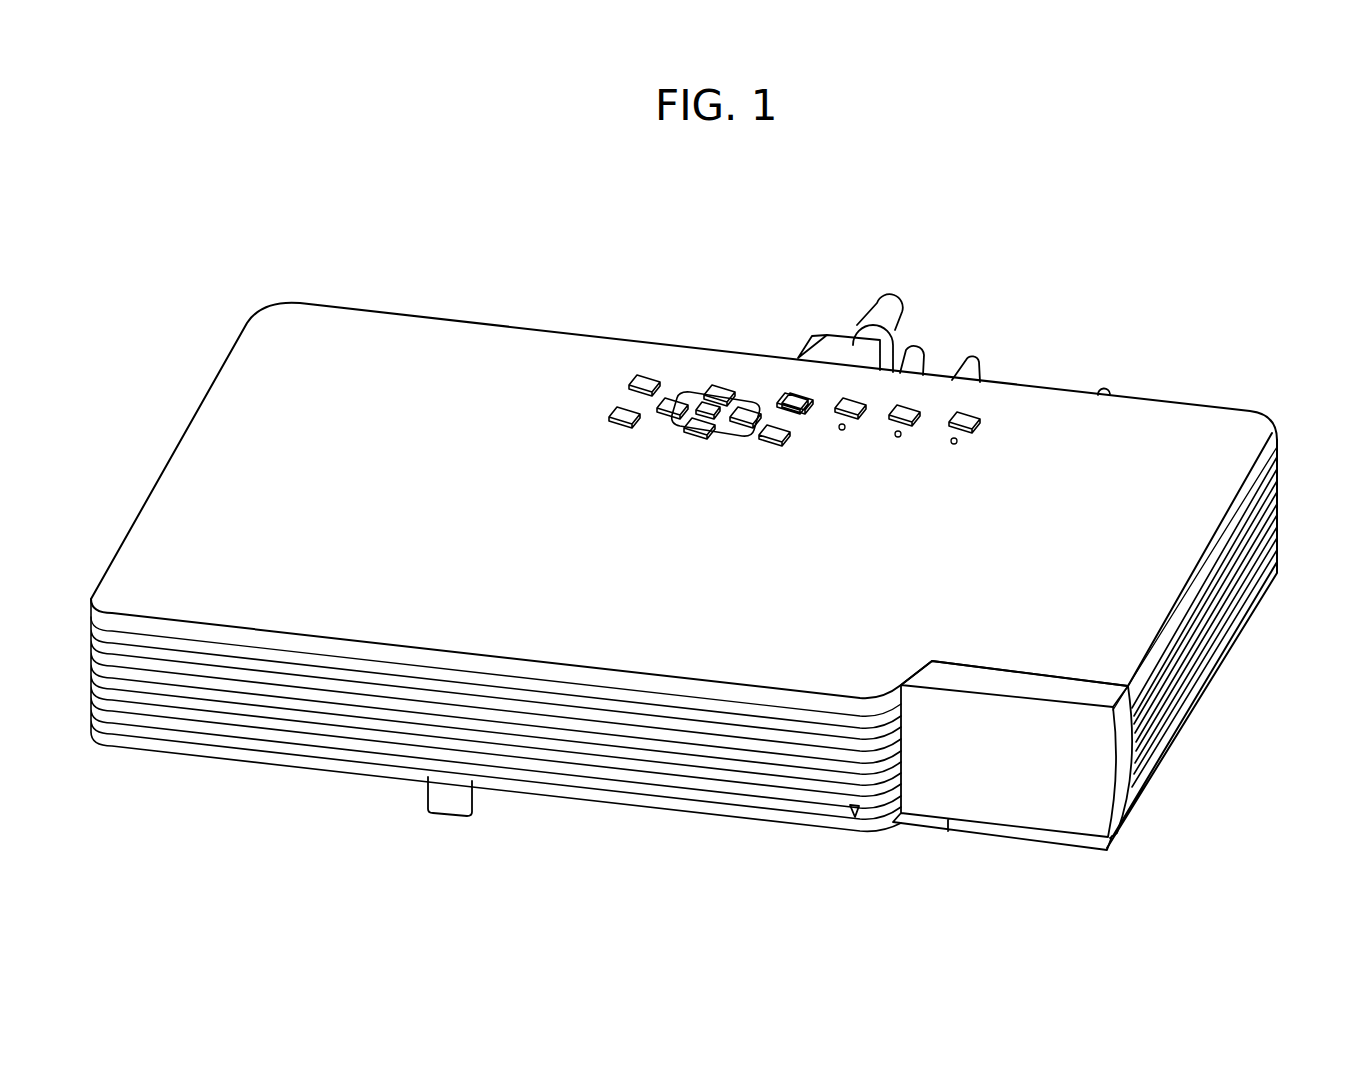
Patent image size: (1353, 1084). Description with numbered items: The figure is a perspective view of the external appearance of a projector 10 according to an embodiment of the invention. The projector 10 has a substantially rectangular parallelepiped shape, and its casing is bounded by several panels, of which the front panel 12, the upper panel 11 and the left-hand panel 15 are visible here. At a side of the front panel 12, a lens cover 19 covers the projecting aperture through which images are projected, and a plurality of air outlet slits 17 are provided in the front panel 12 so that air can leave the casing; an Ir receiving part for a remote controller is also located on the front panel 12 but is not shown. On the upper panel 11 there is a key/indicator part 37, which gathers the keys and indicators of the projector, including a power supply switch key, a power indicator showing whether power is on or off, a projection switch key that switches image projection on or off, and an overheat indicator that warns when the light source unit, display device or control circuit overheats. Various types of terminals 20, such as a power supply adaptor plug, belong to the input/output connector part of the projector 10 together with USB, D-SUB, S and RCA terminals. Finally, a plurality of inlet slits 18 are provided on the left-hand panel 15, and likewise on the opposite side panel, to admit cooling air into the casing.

The projector 10 is at (642, 270).
The upper panel 11 is at (428, 338).
The front panel 12 is at (563, 780).
The left-hand panel 15 is at (1197, 687).
The air outlet slits 17 is at (672, 798).
The inlet slits 18 is at (1233, 597).
The lens cover 19 is at (1030, 818).
The terminals 20 is at (942, 297).
The key/indicator part 37 is at (728, 370).